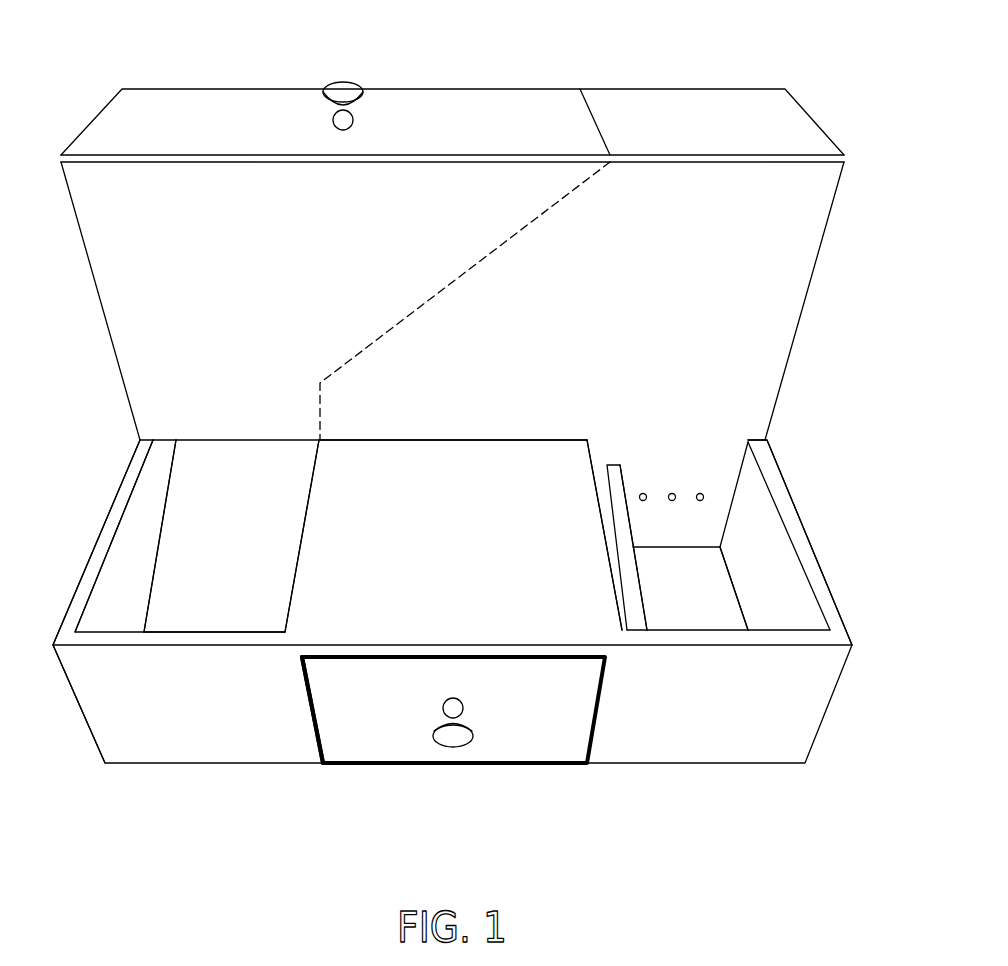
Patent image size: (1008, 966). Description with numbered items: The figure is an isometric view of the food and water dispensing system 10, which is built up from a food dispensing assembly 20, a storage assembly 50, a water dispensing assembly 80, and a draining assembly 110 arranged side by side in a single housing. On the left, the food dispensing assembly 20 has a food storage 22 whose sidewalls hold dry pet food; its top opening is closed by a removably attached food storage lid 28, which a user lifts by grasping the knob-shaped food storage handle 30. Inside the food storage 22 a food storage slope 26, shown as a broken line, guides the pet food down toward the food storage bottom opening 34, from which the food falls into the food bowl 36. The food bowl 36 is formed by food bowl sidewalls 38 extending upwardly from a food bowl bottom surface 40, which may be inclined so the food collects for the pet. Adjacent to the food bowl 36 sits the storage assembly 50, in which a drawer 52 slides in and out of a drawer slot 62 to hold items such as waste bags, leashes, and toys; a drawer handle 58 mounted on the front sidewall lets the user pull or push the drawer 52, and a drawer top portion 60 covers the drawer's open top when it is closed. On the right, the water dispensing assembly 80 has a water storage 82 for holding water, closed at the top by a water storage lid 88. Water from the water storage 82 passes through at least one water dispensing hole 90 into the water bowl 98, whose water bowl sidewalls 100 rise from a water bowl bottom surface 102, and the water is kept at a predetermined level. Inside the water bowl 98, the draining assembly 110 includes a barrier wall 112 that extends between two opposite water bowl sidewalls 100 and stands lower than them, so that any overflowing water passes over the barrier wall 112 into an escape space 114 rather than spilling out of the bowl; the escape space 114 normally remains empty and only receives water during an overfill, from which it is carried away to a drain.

The food and water dispensing system 10 is at (118, 43).
The food dispensing assembly 20 is at (95, 345).
The food storage 22 is at (110, 231).
The food storage slope 26 is at (508, 250).
The food storage lid 28 is at (210, 110).
The food storage handle 30 is at (343, 88).
The food storage bottom opening 34 is at (200, 440).
The food bowl 36 is at (127, 648).
The food bowl sidewalls 38 is at (130, 547).
The food bowl bottom surface 40 is at (180, 602).
The storage assembly 50 is at (367, 780).
The drawer 52 is at (537, 735).
The drawer handle 58 is at (462, 733).
The drawer top portion 60 is at (363, 613).
The drawer slot 62 is at (307, 697).
The water dispensing assembly 80 is at (805, 353).
The water storage 82 is at (795, 238).
The water storage lid 88 is at (693, 108).
The water dispensing hole 90 is at (700, 500).
The water bowl 98 is at (745, 625).
The water bowl sidewalls 100 is at (795, 620).
The water bowl bottom surface 102 is at (707, 605).
The draining assembly 110 is at (626, 641).
The barrier wall 112 is at (640, 618).
The escape space 114 is at (615, 500).